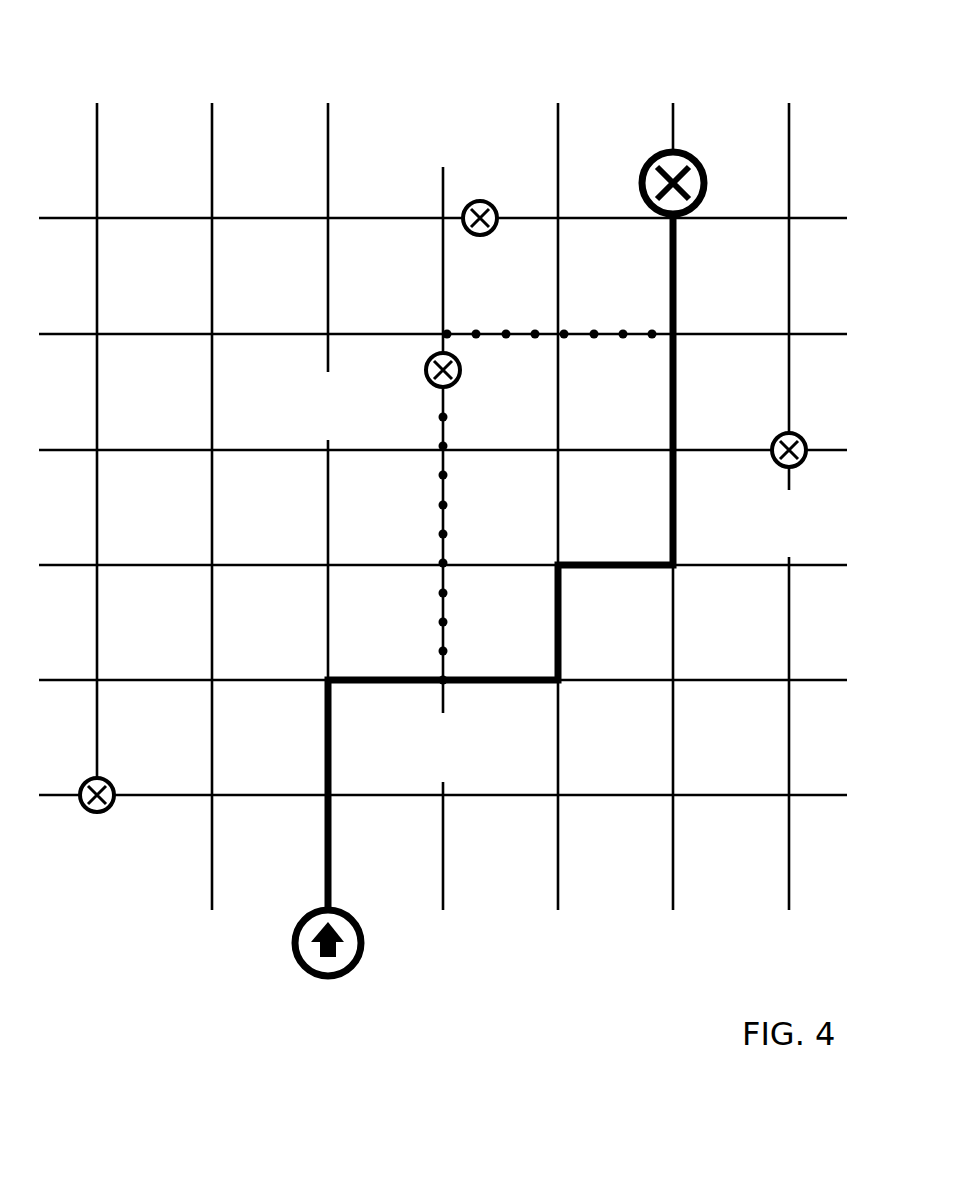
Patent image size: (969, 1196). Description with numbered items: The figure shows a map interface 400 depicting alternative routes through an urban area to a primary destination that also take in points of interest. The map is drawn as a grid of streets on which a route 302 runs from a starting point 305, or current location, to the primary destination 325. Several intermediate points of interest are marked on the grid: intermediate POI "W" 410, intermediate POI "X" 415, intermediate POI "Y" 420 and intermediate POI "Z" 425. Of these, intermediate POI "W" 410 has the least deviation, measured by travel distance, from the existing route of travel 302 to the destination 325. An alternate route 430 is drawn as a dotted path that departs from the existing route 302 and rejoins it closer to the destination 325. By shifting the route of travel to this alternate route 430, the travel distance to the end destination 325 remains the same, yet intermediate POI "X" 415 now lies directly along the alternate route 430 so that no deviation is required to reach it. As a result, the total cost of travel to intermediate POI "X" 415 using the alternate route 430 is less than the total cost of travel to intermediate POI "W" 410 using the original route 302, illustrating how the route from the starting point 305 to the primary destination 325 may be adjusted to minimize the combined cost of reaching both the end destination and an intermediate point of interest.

The map display with route grid 400 is at (812, 50).
The route 302 is at (332, 703).
The starting point 305 is at (358, 964).
The primary destination 325 is at (661, 152).
The intermediate POI "W" 410 is at (771, 456).
The intermediate POI "X" 415 is at (426, 368).
The intermediate POI Y 420 is at (478, 200).
The intermediate POI Z 425 is at (98, 813).
The alternate route 430 is at (447, 474).